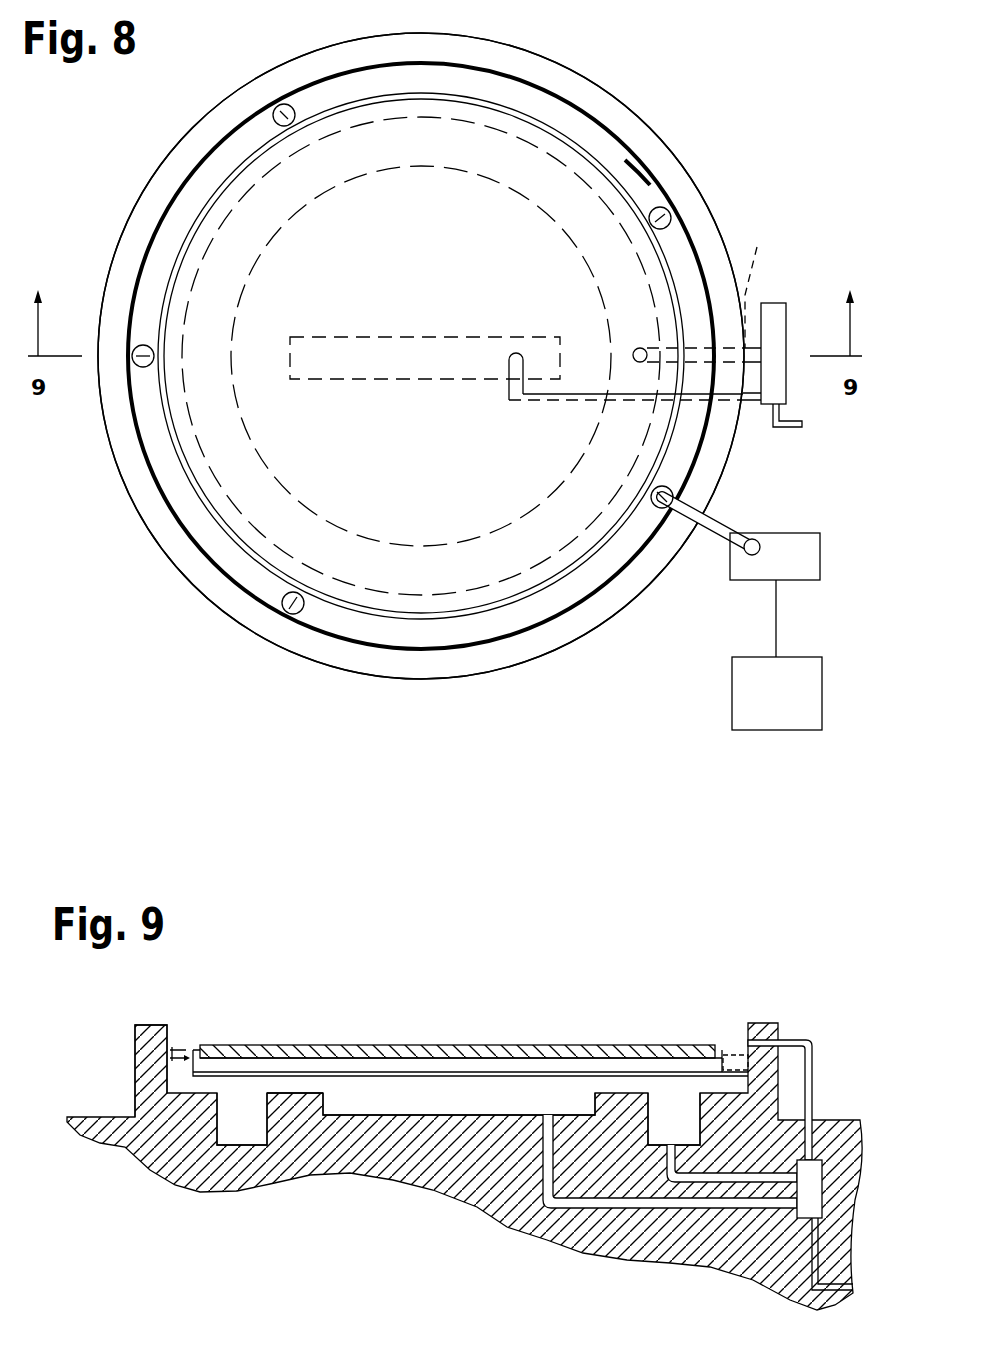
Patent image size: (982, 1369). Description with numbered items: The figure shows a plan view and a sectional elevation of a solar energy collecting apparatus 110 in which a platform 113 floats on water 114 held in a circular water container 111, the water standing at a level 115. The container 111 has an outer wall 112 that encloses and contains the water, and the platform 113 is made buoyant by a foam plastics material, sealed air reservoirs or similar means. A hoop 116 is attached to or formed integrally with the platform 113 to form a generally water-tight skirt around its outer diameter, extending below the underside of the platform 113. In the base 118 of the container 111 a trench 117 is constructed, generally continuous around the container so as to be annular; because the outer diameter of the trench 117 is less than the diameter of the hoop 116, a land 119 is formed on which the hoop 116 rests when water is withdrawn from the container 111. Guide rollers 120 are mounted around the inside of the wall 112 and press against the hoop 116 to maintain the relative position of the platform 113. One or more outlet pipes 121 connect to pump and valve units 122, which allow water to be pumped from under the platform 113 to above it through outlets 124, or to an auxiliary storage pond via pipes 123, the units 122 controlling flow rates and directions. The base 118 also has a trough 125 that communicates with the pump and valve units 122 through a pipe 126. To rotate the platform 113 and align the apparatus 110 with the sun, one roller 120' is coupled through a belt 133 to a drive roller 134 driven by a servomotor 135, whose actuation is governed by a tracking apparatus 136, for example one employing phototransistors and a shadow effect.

In FIG. 8, the solar energy collecting apparatus 110 is at (308, 670).
In FIG. 8, the water container 111 is at (193, 118).
In FIG. 9, the water container 111 is at (152, 1160).
In FIG. 8, the outer wall 112 is at (143, 218).
In FIG. 9, the outer wall 112 is at (146, 1025).
In FIG. 8, the platform 113 is at (445, 243).
In FIG. 9, the platform 113 is at (463, 1046).
In FIG. 8, the water 114 is at (622, 164).
In FIG. 9, the water 114 is at (732, 1056).
In FIG. 9, the level 115 is at (538, 1060).
In FIG. 8, the hoop 116 is at (188, 483).
In FIG. 9, the hoop 116 is at (186, 1050).
In FIG. 8, the trench 117 is at (548, 140).
In FIG. 9, the trench 117 is at (247, 1127).
In FIG. 9, the base 118 is at (297, 1103).
In FIG. 9, the land 119 is at (708, 1092).
In FIG. 8, the guide rollers 120 is at (444, 312).
In FIG. 9, the guide rollers 120 is at (157, 1011).
In FIG. 8, the roller 120' is at (666, 559).
In FIG. 8, the outlet pipes 121 is at (645, 360).
In FIG. 9, the outlet pipes 121 is at (738, 1187).
In FIG. 8, the pump and valve units 122 is at (775, 304).
In FIG. 9, the pump and valve units 122 is at (812, 1200).
In FIG. 8, the pipes 123 is at (785, 428).
In FIG. 9, the pipes 123 is at (826, 1296).
In FIG. 8, the outlets 124 is at (716, 292).
In FIG. 9, the outlets 124 is at (793, 1043).
In FIG. 8, the trough 125 is at (351, 345).
In FIG. 9, the trough 125 is at (386, 1100).
In FIG. 8, the pipe 126 is at (530, 403).
In FIG. 9, the pipe 126 is at (534, 1180).
In FIG. 8, the belt 133 is at (720, 543).
In FIG. 8, the drive roller 134 is at (759, 553).
In FIG. 8, the servomotor 135 is at (792, 543).
In FIG. 8, the tracking apparatus 136 is at (797, 716).